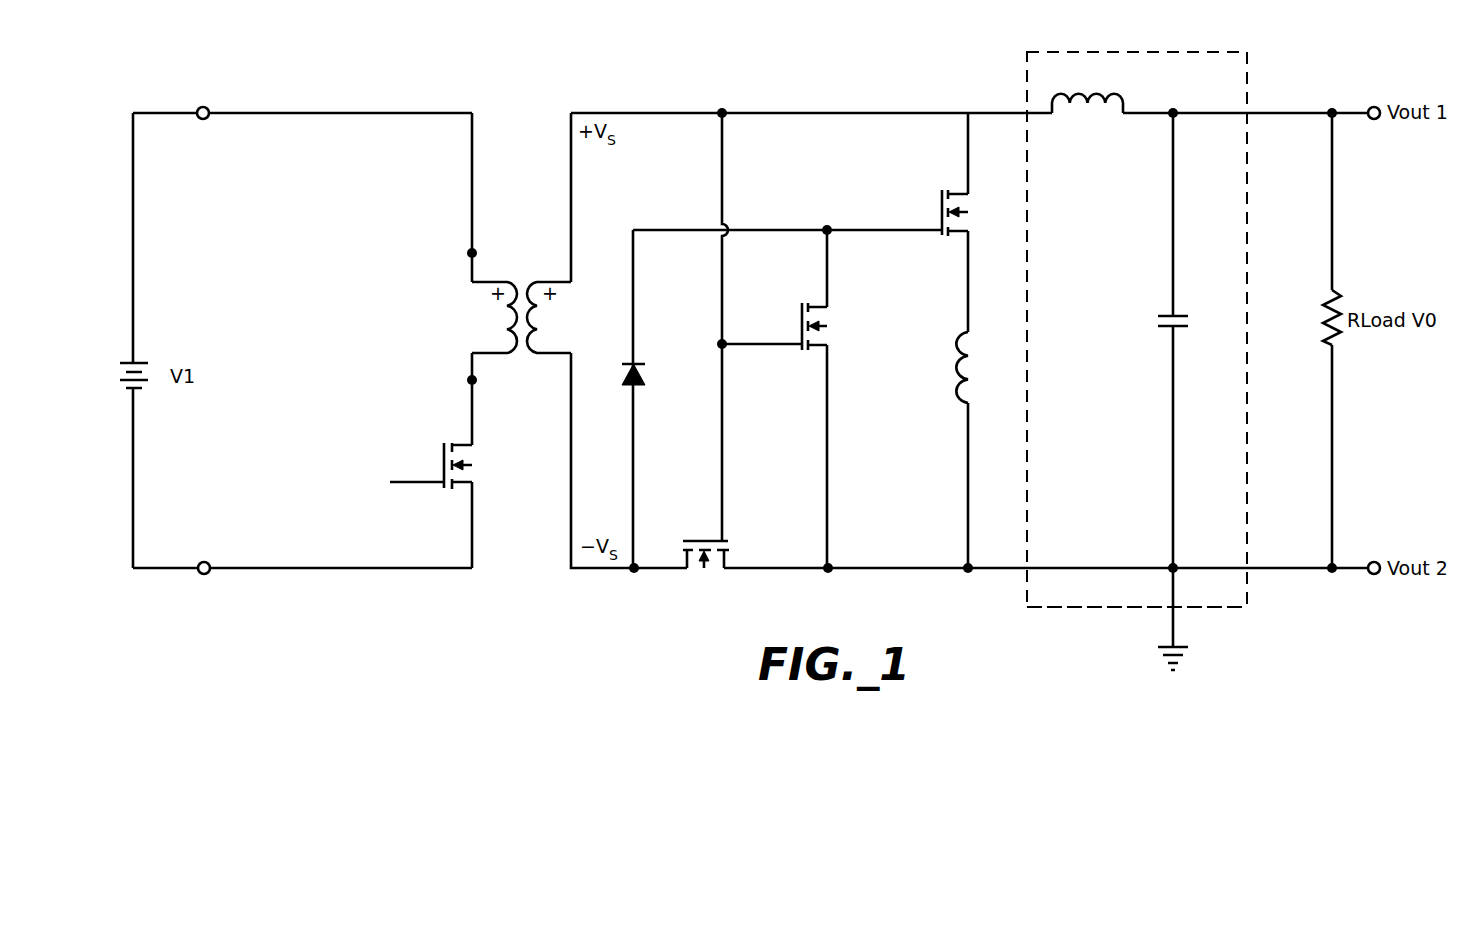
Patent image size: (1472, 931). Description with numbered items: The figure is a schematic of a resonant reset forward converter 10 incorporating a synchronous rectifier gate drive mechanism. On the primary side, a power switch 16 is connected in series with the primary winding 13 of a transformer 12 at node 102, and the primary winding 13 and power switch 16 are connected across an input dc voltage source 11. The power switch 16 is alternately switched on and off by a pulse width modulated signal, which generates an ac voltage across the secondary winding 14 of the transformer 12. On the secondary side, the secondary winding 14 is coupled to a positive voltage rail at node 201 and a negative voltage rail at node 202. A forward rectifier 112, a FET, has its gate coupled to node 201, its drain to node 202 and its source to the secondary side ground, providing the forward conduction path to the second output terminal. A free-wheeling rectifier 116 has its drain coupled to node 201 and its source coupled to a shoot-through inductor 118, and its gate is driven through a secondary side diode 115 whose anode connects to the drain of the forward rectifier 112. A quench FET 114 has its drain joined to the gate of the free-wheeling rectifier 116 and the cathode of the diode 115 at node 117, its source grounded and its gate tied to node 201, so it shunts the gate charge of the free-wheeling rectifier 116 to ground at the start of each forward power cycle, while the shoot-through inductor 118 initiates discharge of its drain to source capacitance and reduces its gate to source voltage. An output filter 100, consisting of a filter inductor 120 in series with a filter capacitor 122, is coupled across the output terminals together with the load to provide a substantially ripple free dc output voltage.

The resonant reset forward converter 10 is at (1058, 36).
The input dc voltage source 11 is at (144, 362).
The transformer 12 is at (523, 271).
The primary winding 13 is at (507, 318).
The secondary winding 14 is at (537, 318).
The power switch 16 is at (444, 465).
The output filter 100 is at (1119, 609).
The node 102 is at (462, 389).
The forward rectifier 112 is at (706, 540).
The quench FET 114 is at (801, 325).
The secondary side diode 115 is at (637, 363).
The free-wheeling rectifier 116 is at (941, 212).
The node 117 is at (826, 228).
The shoot-through inductor 118 is at (950, 357).
The filter inductor 120 is at (1094, 94).
The filter capacitor 122 is at (1168, 317).
The node 201 is at (725, 110).
The node 202 is at (632, 572).